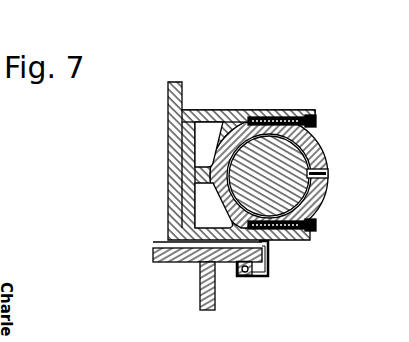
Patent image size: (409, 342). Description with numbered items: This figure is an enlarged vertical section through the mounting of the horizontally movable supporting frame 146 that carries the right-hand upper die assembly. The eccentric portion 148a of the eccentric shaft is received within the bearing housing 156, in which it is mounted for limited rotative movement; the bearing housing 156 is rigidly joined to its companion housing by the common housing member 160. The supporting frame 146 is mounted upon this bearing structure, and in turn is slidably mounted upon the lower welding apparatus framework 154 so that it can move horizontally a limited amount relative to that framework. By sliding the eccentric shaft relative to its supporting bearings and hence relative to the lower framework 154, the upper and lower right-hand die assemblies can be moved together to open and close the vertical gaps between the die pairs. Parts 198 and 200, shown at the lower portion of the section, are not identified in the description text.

The supporting frame 146 is at (177, 83).
The common housing member 160 is at (218, 110).
The bearing housing 156 is at (325, 154).
The eccentric portion of the shaft 148a is at (322, 188).
The lower welding apparatus framework 154 is at (195, 298).
The fastener 198 is at (238, 277).
The bracket 200 is at (272, 263).